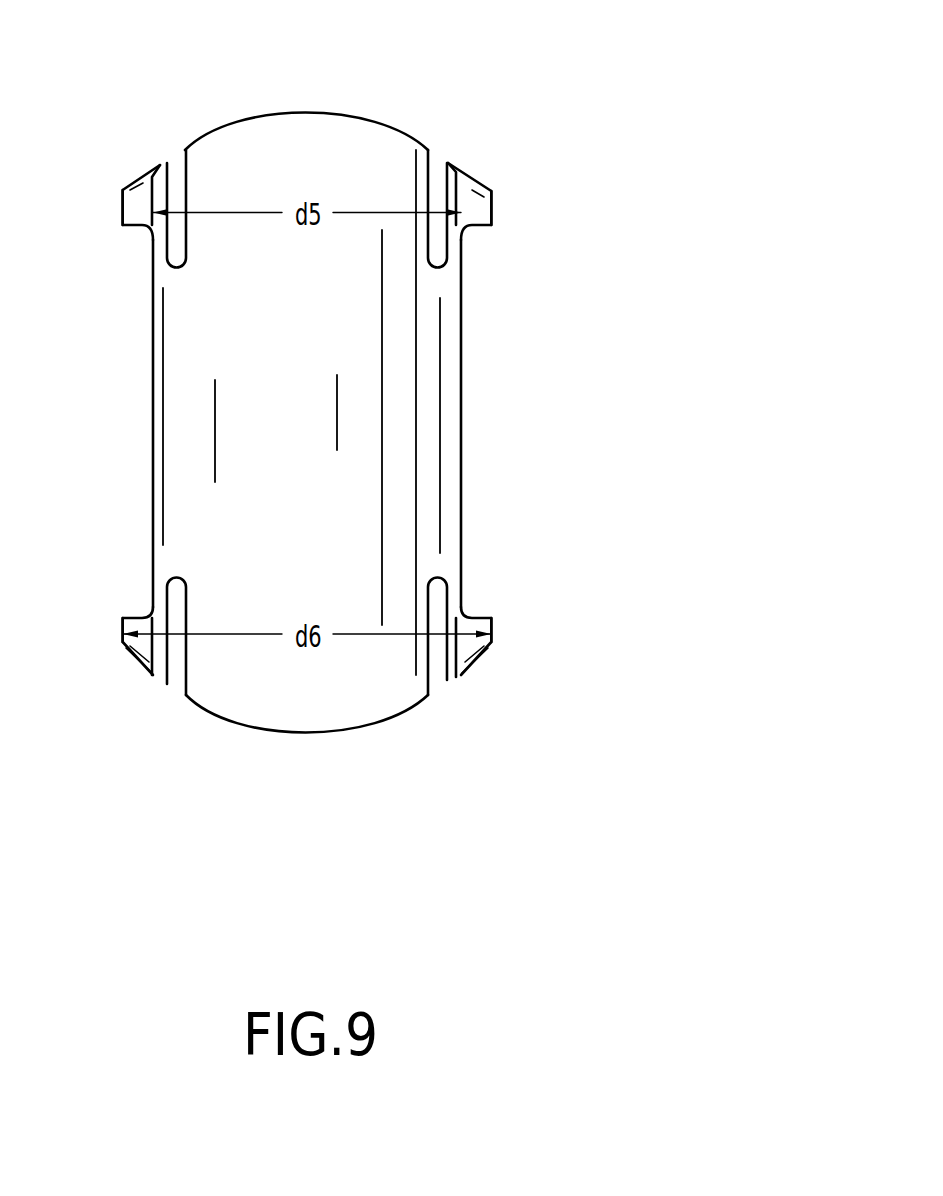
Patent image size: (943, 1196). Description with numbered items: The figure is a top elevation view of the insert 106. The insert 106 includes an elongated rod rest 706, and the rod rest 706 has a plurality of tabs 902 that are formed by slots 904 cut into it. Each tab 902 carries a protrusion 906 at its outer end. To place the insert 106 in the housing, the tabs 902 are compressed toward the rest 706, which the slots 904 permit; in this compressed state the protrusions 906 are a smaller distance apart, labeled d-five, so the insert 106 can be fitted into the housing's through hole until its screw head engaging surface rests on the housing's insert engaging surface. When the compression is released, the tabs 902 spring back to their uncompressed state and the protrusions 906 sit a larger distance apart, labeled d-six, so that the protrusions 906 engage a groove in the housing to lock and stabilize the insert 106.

The insert 106 is at (686, 102).
The elongated rod rest 706 is at (430, 407).
The tab 902 is at (161, 165).
The slot 904 is at (175, 160).
The protrusion 906 is at (132, 205).